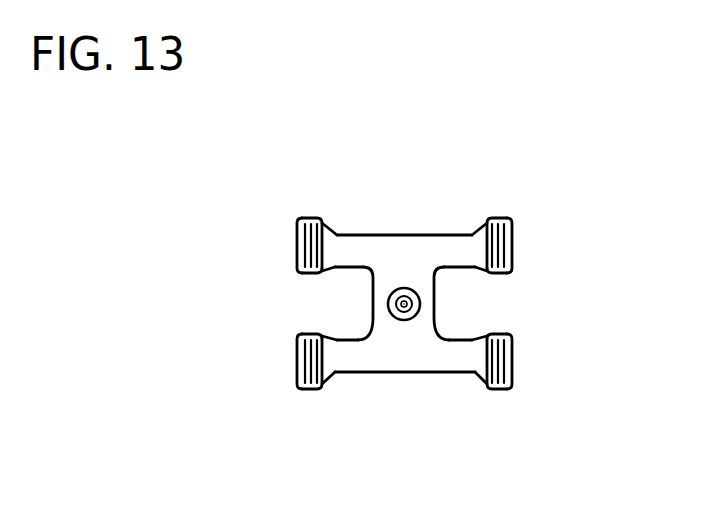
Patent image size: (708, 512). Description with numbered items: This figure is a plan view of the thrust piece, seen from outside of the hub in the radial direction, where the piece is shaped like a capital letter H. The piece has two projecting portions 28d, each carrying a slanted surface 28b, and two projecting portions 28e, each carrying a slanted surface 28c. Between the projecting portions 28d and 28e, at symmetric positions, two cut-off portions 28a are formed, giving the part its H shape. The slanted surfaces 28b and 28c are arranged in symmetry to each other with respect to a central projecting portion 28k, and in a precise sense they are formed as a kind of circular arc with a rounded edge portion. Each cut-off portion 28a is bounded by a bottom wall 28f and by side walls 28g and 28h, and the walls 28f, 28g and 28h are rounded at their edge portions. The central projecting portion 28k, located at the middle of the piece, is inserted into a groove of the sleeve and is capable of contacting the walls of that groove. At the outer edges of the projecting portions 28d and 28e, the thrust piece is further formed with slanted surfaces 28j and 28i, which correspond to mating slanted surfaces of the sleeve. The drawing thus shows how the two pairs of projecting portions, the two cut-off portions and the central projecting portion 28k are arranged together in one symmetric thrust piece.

The cut-off portion 28a is at (340, 307).
The slanted surface 28b is at (480, 228).
The slanted surface 28c is at (327, 230).
The projecting portion 28d is at (500, 219).
The projecting portion 28e is at (302, 220).
The bottom wall 28f is at (433, 305).
The side wall 28g is at (500, 276).
The side wall 28h is at (308, 274).
The slanted surface 28i is at (513, 237).
The slanted surface 28j is at (297, 232).
The central projecting portion 28k is at (399, 289).